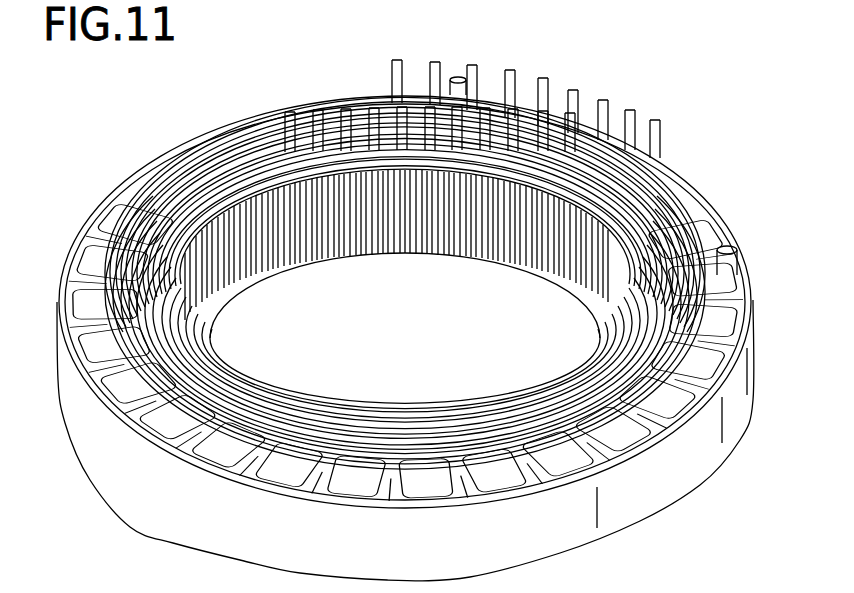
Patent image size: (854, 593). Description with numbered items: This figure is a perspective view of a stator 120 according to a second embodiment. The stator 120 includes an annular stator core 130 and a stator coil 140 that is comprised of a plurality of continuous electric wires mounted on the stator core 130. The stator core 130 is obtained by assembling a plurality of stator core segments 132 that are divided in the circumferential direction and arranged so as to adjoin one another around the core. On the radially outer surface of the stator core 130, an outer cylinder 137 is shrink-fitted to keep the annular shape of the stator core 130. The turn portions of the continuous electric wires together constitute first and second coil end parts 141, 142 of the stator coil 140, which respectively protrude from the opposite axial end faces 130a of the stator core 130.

The stator 120 is at (702, 126).
The stator core 130 is at (690, 451).
The axial end face of the stator core 130a is at (115, 203).
The stator core segment 132 is at (713, 368).
The outer cylinder 137 is at (627, 507).
The stator coil 140 is at (258, 108).
The first coil end part 141 is at (252, 370).
The second coil end part 142 is at (333, 265).